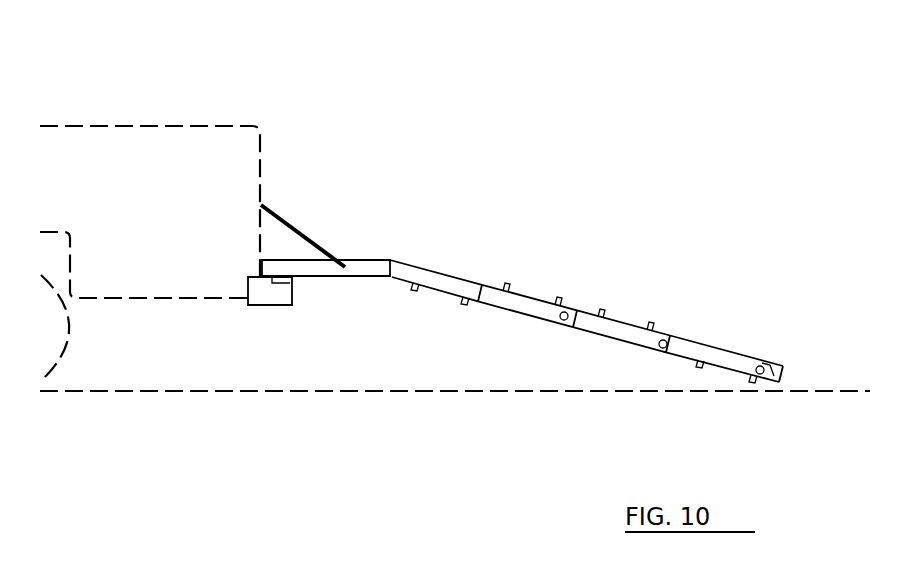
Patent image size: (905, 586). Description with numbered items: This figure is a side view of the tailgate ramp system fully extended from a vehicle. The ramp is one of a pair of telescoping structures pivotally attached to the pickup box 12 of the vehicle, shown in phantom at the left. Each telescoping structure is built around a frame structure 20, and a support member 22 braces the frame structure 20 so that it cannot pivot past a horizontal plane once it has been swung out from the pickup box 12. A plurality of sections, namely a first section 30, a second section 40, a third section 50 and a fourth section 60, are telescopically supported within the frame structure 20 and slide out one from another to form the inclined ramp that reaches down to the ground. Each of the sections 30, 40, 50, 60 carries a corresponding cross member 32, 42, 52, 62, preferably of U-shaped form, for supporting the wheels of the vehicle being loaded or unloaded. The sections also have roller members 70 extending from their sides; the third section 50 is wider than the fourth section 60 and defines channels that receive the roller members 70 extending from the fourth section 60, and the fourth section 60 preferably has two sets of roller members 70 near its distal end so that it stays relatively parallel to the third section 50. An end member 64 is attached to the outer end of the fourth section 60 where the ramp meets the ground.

The pickup box 12 is at (168, 117).
The frame structure 20 is at (366, 283).
The support member 22 is at (303, 232).
The first section 30 is at (447, 272).
The cross member 32 is at (467, 302).
The second section 40 is at (528, 297).
The cross member 42 is at (507, 280).
The third section 50 is at (628, 323).
The cross member 52 is at (601, 310).
The fourth section 60 is at (715, 348).
The cross member 62 is at (700, 365).
The end member 64 is at (780, 363).
The roller members 70 is at (662, 348).